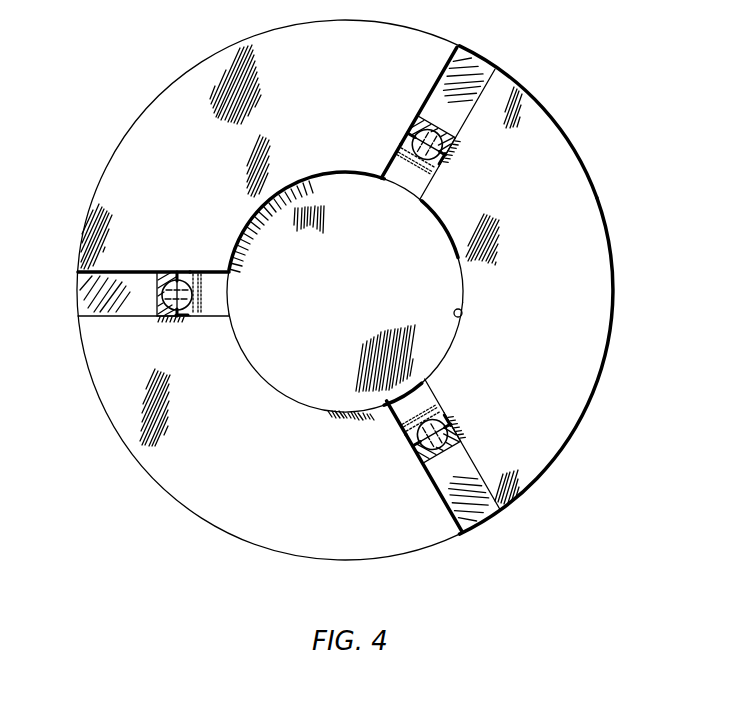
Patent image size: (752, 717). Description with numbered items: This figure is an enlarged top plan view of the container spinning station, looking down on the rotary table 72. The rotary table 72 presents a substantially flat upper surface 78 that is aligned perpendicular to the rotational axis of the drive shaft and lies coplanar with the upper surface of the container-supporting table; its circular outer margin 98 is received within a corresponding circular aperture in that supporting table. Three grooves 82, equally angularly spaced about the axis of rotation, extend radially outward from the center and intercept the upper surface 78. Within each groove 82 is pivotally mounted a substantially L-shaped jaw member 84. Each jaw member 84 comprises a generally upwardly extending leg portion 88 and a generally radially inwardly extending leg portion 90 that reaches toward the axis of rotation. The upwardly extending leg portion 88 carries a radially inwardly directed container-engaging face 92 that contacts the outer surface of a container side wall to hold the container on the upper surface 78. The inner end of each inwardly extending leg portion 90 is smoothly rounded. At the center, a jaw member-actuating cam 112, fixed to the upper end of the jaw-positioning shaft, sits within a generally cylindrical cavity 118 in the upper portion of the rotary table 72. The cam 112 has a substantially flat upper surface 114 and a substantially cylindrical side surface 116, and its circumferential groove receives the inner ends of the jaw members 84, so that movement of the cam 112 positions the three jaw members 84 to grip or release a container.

The rotary table 72 is at (603, 215).
The upper surface 78 is at (598, 337).
The grooves 82 is at (77, 313).
The jaw members 84 is at (130, 264).
The upwardly extending leg portion 88 is at (152, 300).
The radially inwardly extending leg portion 90 is at (464, 165).
The container-engaging face 92 is at (461, 397).
The circular outer margin 98 is at (590, 178).
The jaw member-actuating cam 112 is at (297, 288).
The upper surface 114 is at (443, 225).
The side surface 116 is at (462, 286).
The cylindrical cavity 118 is at (462, 313).